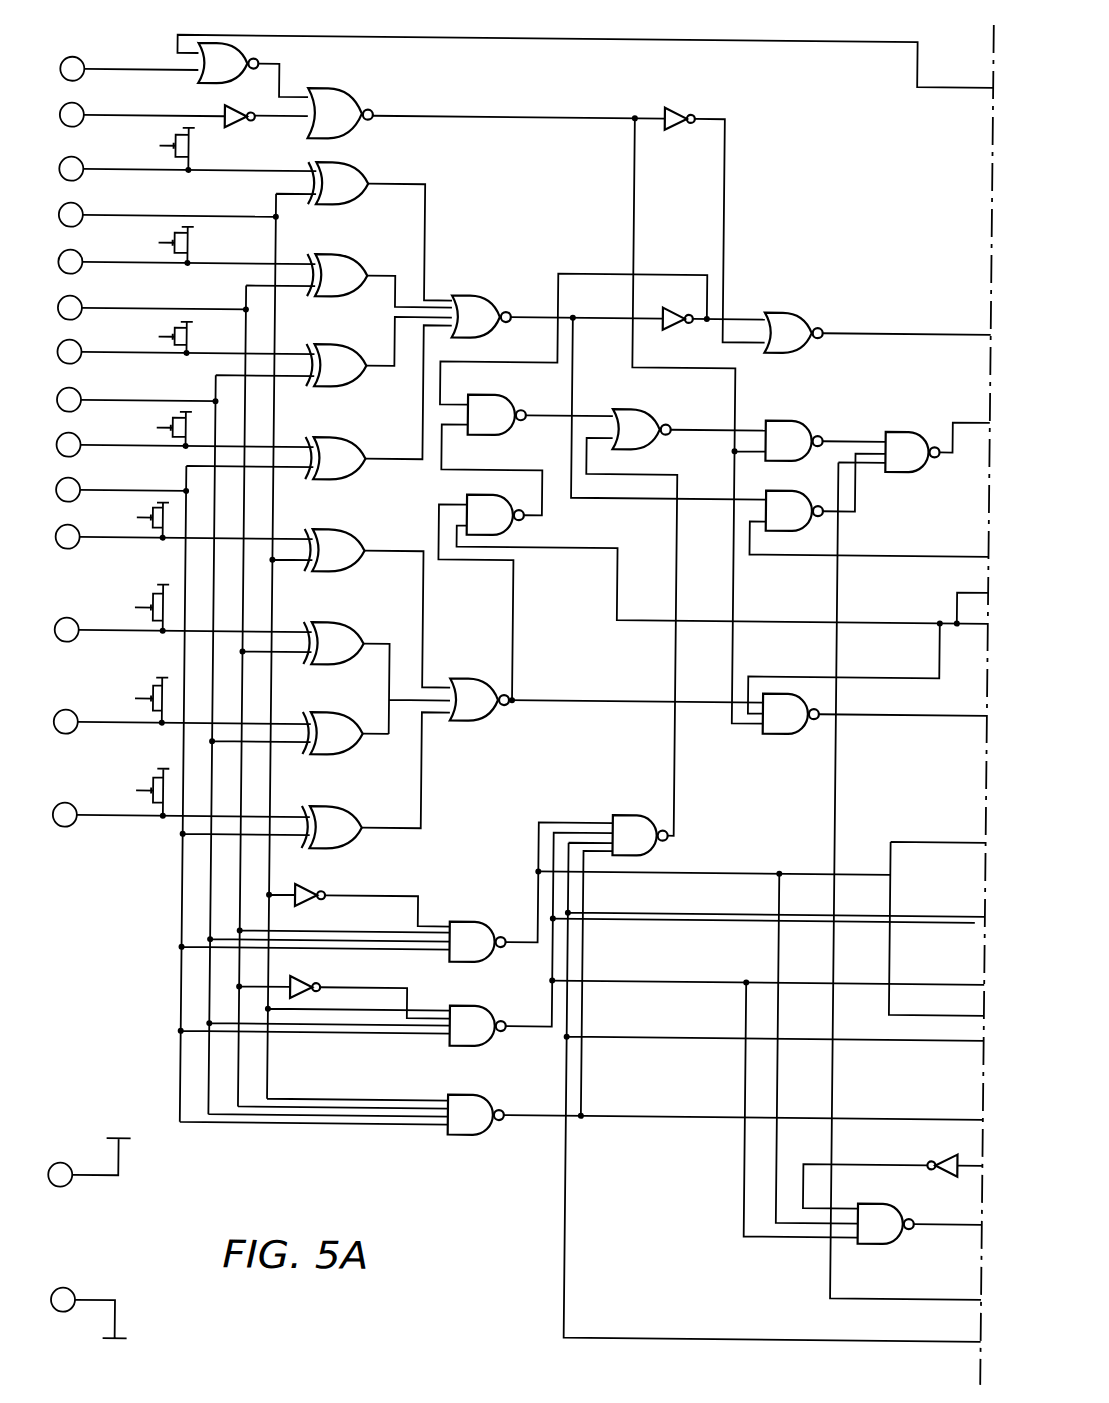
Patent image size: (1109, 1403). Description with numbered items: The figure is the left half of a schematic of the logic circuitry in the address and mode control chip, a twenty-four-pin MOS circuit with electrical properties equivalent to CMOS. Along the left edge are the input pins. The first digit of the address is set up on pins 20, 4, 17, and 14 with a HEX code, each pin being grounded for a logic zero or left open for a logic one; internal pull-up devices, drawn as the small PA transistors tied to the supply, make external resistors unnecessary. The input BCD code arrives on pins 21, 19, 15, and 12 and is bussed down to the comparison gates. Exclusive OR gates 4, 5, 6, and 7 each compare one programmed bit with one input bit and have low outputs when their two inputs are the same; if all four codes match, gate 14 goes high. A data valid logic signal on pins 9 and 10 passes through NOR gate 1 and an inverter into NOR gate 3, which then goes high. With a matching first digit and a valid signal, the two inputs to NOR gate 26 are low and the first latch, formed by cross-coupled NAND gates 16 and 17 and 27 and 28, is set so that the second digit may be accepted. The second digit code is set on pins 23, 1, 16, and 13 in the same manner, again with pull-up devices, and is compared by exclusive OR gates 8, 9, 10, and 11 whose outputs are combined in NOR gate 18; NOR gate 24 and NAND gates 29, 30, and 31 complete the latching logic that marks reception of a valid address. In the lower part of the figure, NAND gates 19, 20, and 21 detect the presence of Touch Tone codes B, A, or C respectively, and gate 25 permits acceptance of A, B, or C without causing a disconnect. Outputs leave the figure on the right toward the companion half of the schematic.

The pin 1 is at (71, 617).
The NOR gate 3 is at (339, 120).
The pin / exclusive OR gate 4 is at (82, 253).
The exclusive OR gate 5 is at (342, 282).
The exclusive OR gate 6 is at (342, 372).
The exclusive OR gate 7 is at (342, 465).
The exclusive OR gate 8 is at (342, 557).
The pin / exclusive OR gate 9 is at (82, 106).
The pin / exclusive OR gate 10 is at (82, 60).
The exclusive OR gate 11 is at (80, 1291).
The pin 12 is at (82, 481).
The pin 13 is at (71, 808).
The pin / gate 14 is at (82, 436).
The pin 15 is at (82, 391).
The pin / NAND gate 16 is at (73, 712).
The pin / NAND gate 17 is at (82, 343).
The NOR gate 18 is at (485, 705).
The pin / NAND gate 19 is at (82, 299).
The pin / NAND gate 20 is at (82, 160).
The pin / NAND gate 21 is at (82, 206).
The pin 23 is at (82, 528).
The NOR gate 24 is at (644, 433).
The gate 25 is at (645, 839).
The NOR gate 26 is at (795, 335).
The NAND gate 27 is at (795, 443).
The NAND gate 28 is at (796, 513).
The NAND gate 29 is at (795, 716).
The NAND gate 30 is at (913, 453).
The NAND gate 31 is at (894, 1225).